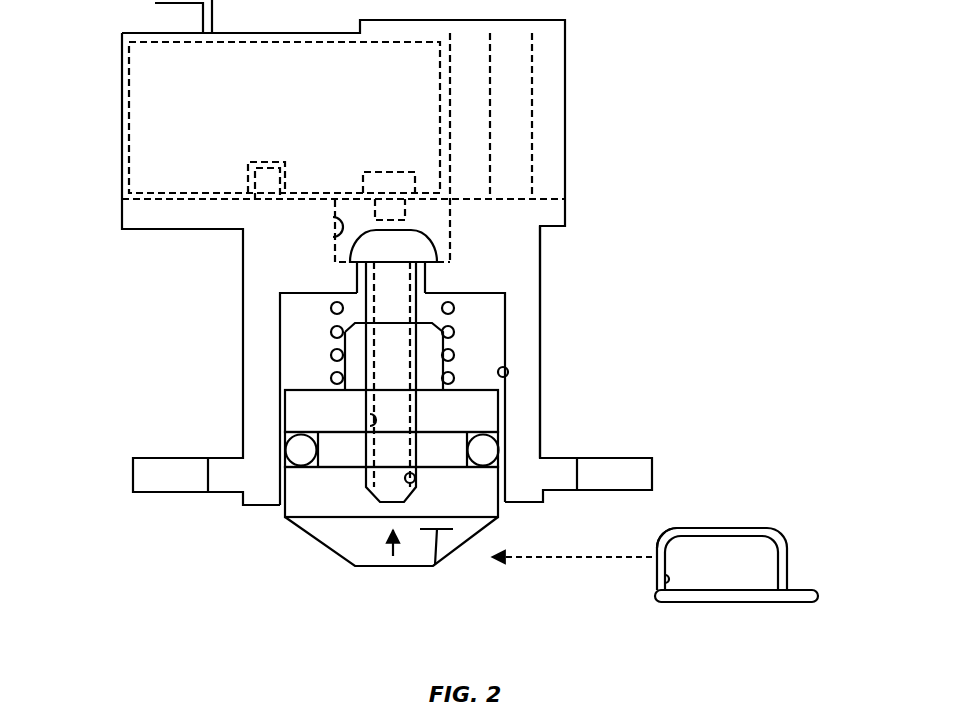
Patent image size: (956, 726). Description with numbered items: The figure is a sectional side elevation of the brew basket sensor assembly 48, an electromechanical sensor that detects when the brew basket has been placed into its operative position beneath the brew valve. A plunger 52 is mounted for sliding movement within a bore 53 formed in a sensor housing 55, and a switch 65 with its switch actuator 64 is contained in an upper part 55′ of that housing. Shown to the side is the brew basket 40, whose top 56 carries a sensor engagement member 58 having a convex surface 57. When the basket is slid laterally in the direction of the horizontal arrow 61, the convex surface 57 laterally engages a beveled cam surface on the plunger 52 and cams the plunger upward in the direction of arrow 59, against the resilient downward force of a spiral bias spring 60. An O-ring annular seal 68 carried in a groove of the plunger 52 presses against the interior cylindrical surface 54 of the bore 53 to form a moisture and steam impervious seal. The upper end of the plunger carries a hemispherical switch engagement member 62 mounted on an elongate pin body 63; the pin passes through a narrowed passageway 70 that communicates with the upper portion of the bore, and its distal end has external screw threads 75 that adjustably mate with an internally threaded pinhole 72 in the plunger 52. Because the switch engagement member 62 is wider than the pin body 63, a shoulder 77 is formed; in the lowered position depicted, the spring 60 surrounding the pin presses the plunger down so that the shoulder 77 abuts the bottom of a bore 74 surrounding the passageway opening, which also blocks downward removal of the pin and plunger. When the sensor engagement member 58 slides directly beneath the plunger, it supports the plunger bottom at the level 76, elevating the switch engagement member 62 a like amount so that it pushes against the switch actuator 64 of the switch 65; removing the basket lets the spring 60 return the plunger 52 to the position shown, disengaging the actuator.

The brew basket sensor assembly 48 is at (620, 190).
The upper part of the sensor housing 55′ is at (553, 103).
The switch 65 is at (380, 182).
The switch actuator 64 is at (385, 210).
The bore surrounding the opening to the pinhole 74 is at (340, 237).
The switch engagement member 62 is at (363, 256).
The shoulder 77 is at (358, 293).
The narrowed passageway 70 is at (430, 279).
The elongate pin body 63 is at (385, 305).
The external screw threads 75 is at (412, 484).
The spiral bias spring 60 is at (332, 354).
The internally threaded pinhole 72 is at (370, 420).
The O-ring annular seal 68 is at (490, 450).
The bore 53 is at (487, 333).
The sensor housing 55 is at (545, 288).
The interior cylindrical surface of the bore 54 is at (505, 376).
The plunger 52 is at (370, 507).
The arrow 59 is at (390, 556).
The level 76 is at (437, 555).
The horizontal arrow 61 is at (595, 557).
The brew basket 40 is at (787, 527).
The top of the brew basket 56 is at (808, 590).
The convex surface 57 is at (661, 540).
The sensor engagement member 58 is at (660, 590).